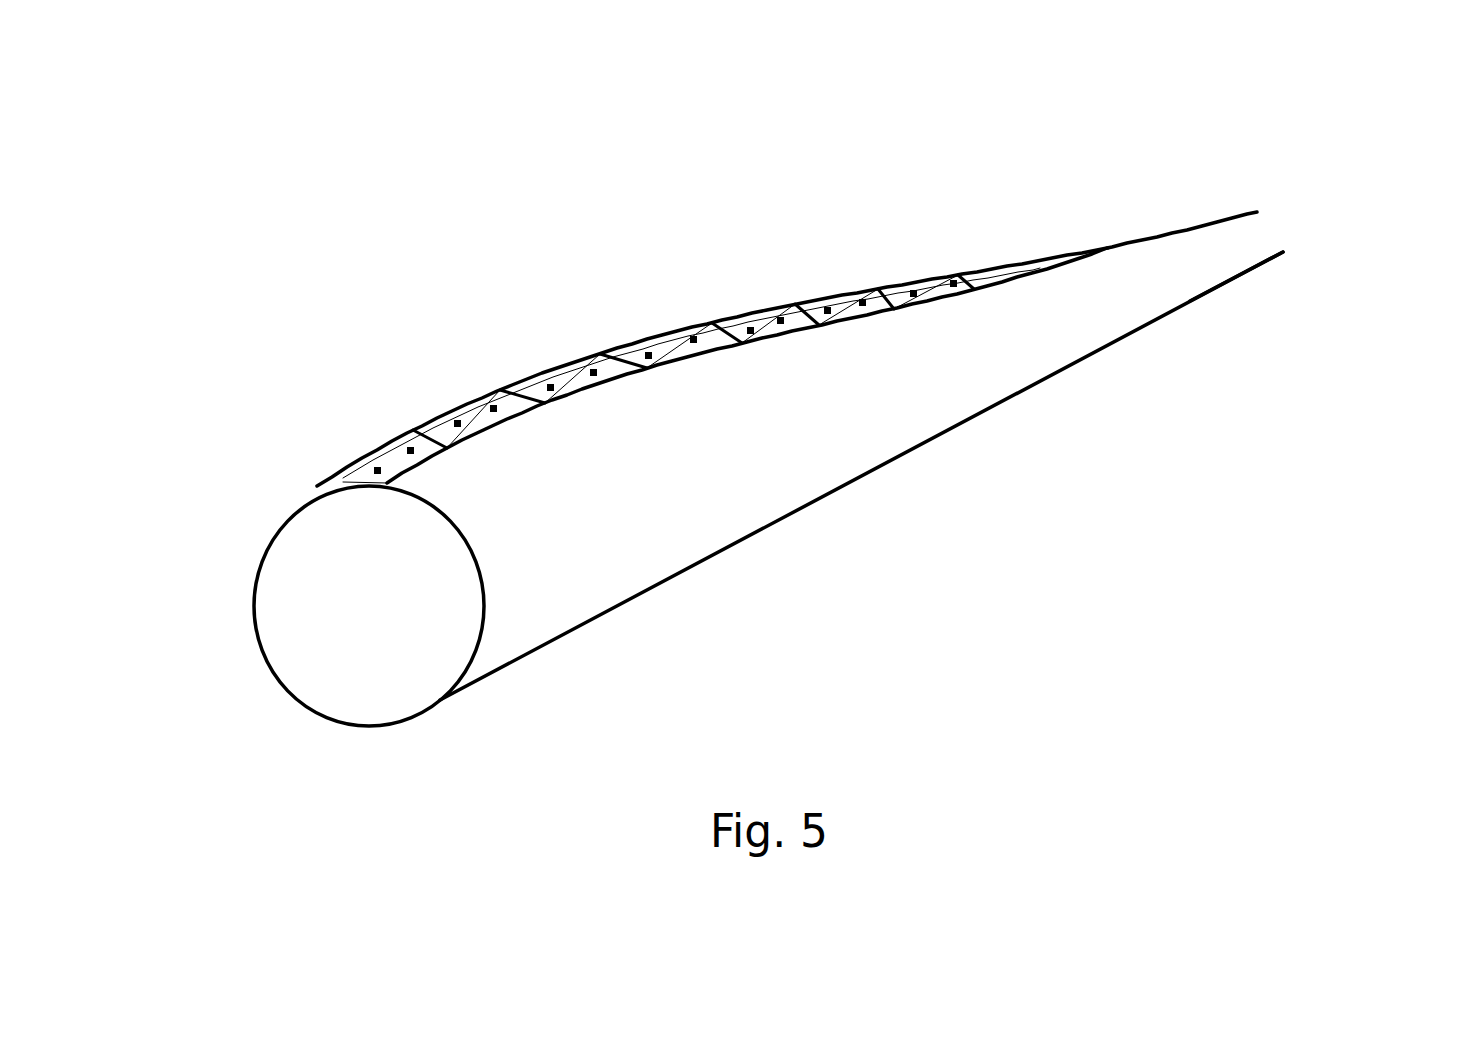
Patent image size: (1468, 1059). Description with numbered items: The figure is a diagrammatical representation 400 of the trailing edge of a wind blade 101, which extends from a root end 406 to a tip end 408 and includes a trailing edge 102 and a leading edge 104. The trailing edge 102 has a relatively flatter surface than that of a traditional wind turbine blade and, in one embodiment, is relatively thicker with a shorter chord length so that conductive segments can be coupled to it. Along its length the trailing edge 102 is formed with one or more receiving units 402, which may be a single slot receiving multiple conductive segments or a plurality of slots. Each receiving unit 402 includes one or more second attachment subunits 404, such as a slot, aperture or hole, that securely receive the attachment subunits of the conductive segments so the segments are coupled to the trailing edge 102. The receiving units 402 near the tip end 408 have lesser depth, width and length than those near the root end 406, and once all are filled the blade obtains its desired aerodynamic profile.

The wind blade 101 is at (766, 444).
The trailing edge 102 is at (787, 306).
The leading edge 104 is at (771, 542).
The diagrammatical representation 400 is at (766, 410).
The receiving unit 402 is at (640, 335).
The second attachment subunit 404 is at (463, 400).
The root end 406 is at (268, 586).
The tip end 408 is at (1227, 269).